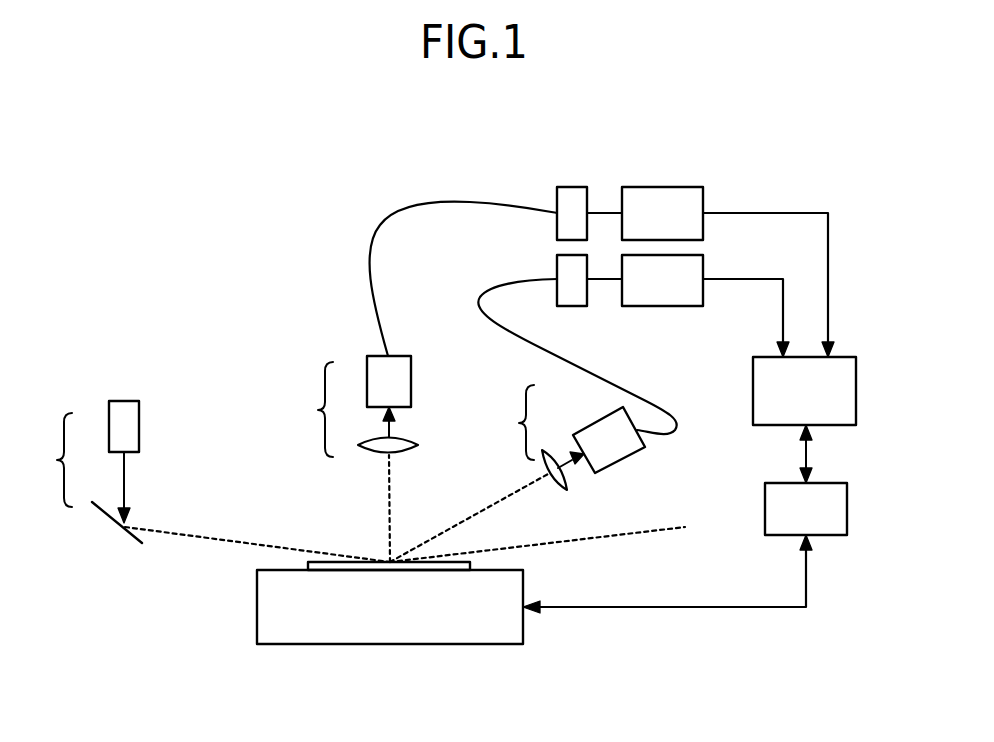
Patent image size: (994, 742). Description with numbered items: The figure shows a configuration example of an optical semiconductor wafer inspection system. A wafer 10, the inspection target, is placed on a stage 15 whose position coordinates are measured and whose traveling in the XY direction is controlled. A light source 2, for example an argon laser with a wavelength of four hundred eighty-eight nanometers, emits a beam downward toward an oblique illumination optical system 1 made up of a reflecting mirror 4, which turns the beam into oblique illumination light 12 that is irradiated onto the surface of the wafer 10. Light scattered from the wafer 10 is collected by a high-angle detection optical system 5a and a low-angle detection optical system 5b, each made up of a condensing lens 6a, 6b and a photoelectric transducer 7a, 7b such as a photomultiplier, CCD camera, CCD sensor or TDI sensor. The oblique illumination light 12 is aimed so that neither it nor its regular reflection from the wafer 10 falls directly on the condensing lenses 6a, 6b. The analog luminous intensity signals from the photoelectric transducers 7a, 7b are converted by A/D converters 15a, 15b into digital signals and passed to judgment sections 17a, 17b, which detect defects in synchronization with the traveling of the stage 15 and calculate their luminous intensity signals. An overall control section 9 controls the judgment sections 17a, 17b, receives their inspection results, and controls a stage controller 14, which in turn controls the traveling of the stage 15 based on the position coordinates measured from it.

The oblique illumination optical system 1 is at (52, 460).
The light source 2 is at (139, 425).
The reflecting mirror 4 is at (111, 517).
The high-angle detection optical system 5a is at (306, 409).
The low-angle detection optical system 5b is at (507, 422).
The condensing lens 6a is at (418, 450).
The condensing lens 6b is at (567, 485).
The photoelectric transducer 7a is at (411, 382).
The photoelectric transducer 7b is at (618, 461).
The overall control section 9 is at (856, 388).
The wafer 10 is at (305, 566).
The oblique illumination light 12 is at (225, 535).
The stage controller 14 is at (847, 507).
The stage 15 is at (523, 625).
The A/D converter 15a is at (571, 187).
The A/D converter 15b is at (578, 306).
The judgment section 17a is at (661, 187).
The judgment section 17b is at (663, 306).